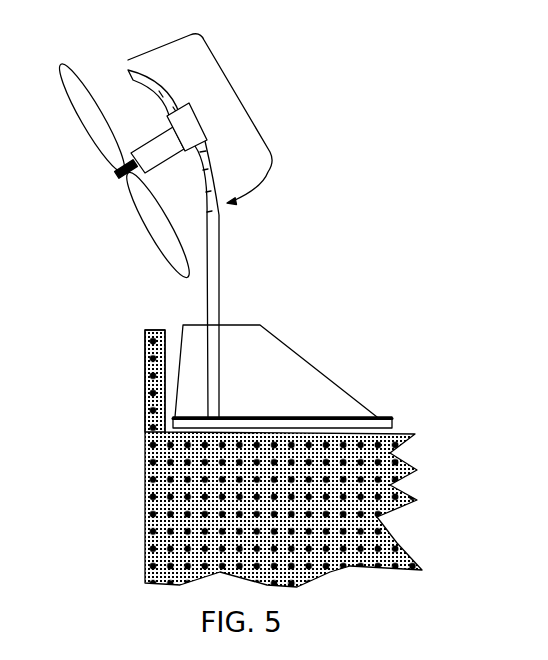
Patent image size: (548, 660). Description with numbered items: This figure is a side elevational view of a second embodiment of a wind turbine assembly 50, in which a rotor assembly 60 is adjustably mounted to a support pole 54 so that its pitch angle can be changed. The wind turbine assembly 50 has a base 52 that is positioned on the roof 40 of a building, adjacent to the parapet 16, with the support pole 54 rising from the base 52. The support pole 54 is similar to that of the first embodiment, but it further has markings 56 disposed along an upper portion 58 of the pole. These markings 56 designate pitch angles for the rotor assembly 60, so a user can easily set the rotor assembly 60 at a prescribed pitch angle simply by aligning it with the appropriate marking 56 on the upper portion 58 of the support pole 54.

The parapet 16 is at (147, 400).
The roof 40 is at (400, 433).
The wind turbine assembly 50 is at (227, 225).
The base 52 is at (377, 417).
The support pole 54 is at (221, 277).
The markings 56 is at (186, 102).
The upper portion 58 is at (238, 80).
The rotor assembly 60 is at (100, 186).